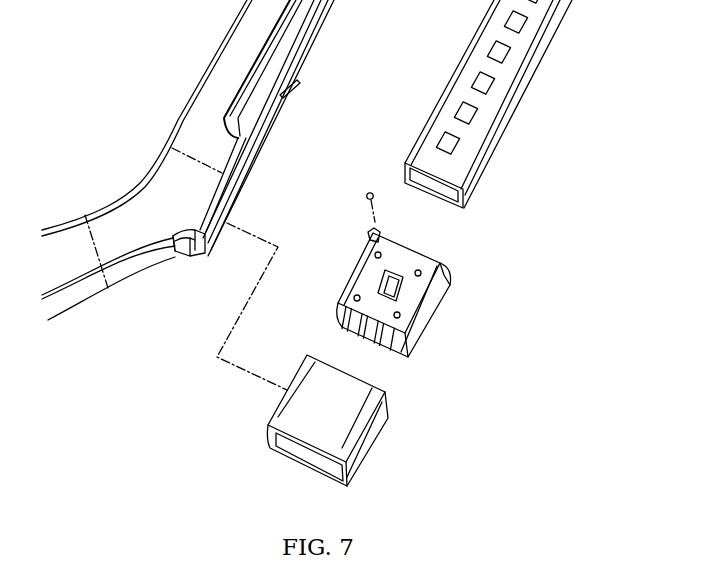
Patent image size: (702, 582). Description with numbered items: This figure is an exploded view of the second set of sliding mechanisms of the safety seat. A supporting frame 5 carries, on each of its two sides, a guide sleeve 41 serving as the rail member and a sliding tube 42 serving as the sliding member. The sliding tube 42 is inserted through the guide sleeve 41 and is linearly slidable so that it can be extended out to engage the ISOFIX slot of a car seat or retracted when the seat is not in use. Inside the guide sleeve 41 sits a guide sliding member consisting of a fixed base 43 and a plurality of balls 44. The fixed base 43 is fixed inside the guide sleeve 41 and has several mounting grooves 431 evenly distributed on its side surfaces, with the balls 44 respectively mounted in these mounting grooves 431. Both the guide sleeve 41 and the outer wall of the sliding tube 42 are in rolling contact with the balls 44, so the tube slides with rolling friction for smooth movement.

The supporting frame 5 is at (155, 197).
The guide sleeve 41 is at (372, 433).
The sliding tube 42 is at (497, 92).
The fixed base 43 is at (423, 310).
The mounting groove 431 is at (375, 254).
The ball 44 is at (366, 196).